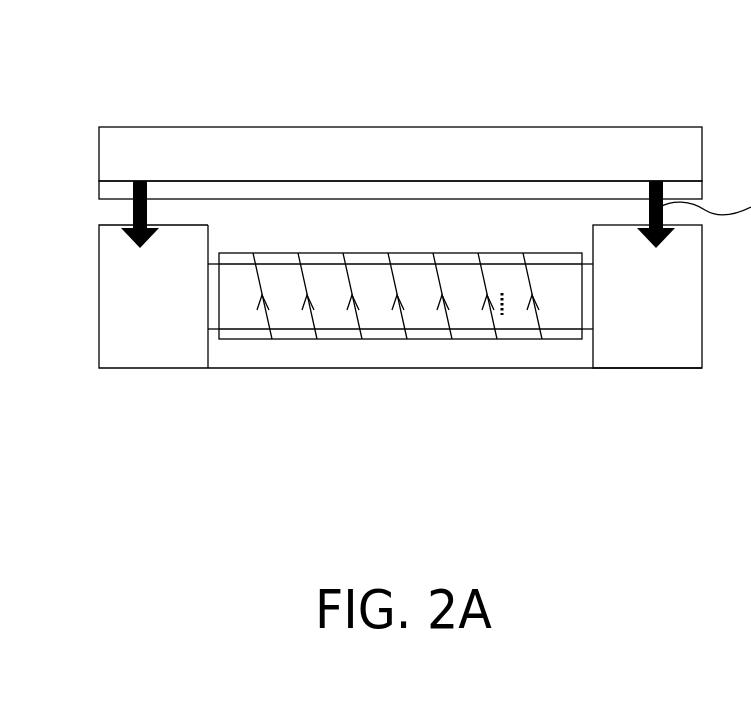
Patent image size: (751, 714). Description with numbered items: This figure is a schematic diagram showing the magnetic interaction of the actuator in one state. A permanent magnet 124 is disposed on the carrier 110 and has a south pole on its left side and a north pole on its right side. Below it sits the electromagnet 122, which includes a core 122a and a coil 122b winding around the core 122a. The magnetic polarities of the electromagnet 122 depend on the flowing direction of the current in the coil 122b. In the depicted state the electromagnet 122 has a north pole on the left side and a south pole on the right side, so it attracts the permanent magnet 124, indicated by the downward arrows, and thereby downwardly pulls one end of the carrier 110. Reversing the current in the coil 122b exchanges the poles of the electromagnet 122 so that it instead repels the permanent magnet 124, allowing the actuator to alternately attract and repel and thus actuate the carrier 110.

The carrier 110 is at (290, 190).
The permanent magnet 124 is at (400, 143).
The electromagnet 122 is at (702, 437).
The core 122a is at (667, 358).
The coil 122b is at (537, 337).